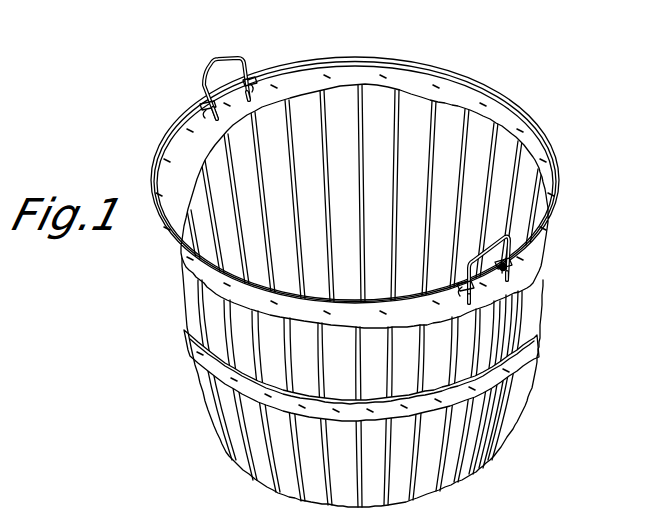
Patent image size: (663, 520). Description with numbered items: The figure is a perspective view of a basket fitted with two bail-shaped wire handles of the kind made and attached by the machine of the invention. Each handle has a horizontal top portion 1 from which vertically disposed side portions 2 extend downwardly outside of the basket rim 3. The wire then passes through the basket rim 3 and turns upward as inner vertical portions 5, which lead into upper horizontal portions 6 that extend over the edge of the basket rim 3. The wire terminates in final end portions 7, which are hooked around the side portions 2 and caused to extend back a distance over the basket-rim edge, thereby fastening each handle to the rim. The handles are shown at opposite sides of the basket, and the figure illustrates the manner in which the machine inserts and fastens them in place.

The horizontal top portion 1 is at (221, 61).
The side portions 2 is at (243, 60).
The basket rim 3 is at (200, 130).
The inner vertical portions 5 is at (262, 76).
The upper horizontal portions 6 is at (215, 104).
The final end portions 7 is at (257, 81).